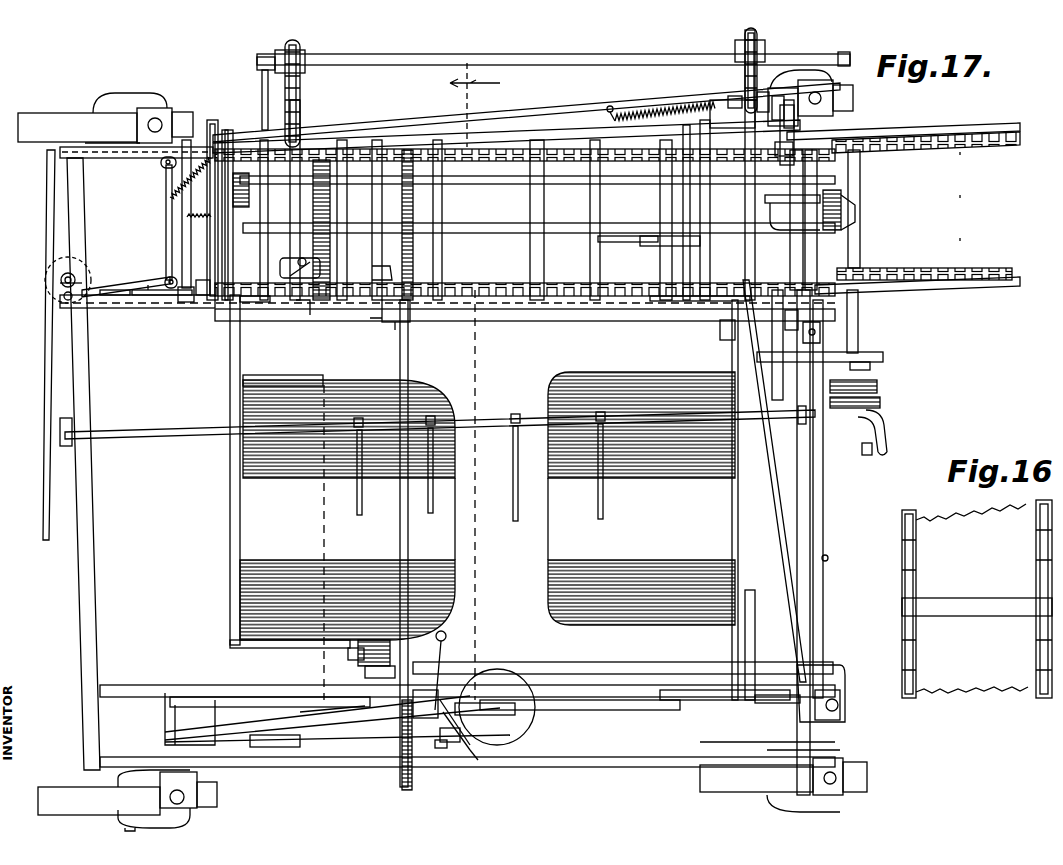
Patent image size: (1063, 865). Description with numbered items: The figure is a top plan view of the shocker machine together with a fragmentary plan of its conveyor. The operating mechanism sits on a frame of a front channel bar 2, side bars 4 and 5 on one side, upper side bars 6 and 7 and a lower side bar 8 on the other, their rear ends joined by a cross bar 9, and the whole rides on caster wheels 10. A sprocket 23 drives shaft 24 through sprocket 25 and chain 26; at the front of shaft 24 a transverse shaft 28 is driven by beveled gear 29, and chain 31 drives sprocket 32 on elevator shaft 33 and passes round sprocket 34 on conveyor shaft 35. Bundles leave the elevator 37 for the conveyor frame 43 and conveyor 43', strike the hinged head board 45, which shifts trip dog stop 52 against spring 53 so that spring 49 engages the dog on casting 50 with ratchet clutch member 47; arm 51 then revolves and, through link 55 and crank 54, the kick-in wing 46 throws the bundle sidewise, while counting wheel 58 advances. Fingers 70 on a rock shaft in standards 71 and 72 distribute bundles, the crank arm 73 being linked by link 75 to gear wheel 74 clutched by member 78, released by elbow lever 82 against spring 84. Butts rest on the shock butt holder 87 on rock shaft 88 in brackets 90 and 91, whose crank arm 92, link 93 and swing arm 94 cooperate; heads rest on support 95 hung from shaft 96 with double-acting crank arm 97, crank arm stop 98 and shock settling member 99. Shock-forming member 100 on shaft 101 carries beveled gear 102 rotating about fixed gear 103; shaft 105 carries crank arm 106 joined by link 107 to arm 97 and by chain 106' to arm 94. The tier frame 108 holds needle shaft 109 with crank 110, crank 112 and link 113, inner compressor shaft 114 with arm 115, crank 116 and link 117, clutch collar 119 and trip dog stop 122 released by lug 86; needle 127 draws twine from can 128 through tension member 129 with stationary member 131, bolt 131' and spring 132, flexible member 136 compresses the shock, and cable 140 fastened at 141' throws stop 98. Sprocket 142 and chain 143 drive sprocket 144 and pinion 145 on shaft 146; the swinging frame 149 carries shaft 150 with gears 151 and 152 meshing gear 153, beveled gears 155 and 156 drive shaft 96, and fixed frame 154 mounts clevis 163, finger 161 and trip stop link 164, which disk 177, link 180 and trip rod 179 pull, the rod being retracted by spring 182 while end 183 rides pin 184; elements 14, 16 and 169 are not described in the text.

In FIG. 17, the front channel bar 2 is at (805, 748).
In FIG. 17, the side bar 4 is at (288, 757).
In FIG. 17, the side bar 5 is at (118, 690).
In FIG. 17, the upper side bar 6 is at (48, 416).
In FIG. 17, the upper side bar 7 is at (125, 155).
In FIG. 17, the lower side bar 8 is at (60, 279).
In FIG. 17, the cross bar 9 is at (85, 590).
In FIG. 17, the caster wheel 10 is at (848, 98).
In FIG. 17, the shaft end 14 is at (848, 52).
In FIG. 17, the lower longitudinal beam 16 is at (123, 305).
In FIG. 17, the sprocket 23 is at (765, 43).
In FIG. 17, the shaft 24 is at (612, 222).
In FIG. 17, the sprocket 25 is at (760, 215).
In FIG. 17, the chain 26 is at (760, 95).
In FIG. 17, the transverse shaft 28 is at (855, 300).
In FIG. 17, the beveled gear 29 is at (850, 230).
In FIG. 17, the chain 31 is at (883, 352).
In FIG. 17, the sprocket 32 is at (870, 366).
In FIG. 17, the elevator shaft 33 is at (860, 313).
In FIG. 17, the sprocket 34 is at (720, 346).
In FIG. 17, the conveyor shaft 35 is at (720, 333).
In FIG. 17, the elevator 37 is at (976, 209).
In FIG. 17, the conveyor frame 43 is at (903, 199).
In FIG. 17, the hinged head board 45 is at (216, 228).
In FIG. 17, the kick-in wing 46 is at (228, 135).
In FIG. 17, the ratchet clutch member 47 is at (795, 110).
In FIG. 17, the spring 49 is at (740, 98).
In FIG. 17, the trip dog casting 50 is at (790, 105).
In FIG. 17, the arm 51 is at (778, 100).
In FIG. 17, the trip dog stop 52 is at (375, 125).
In FIG. 17, the spring 53 is at (612, 120).
In FIG. 17, the crank 54 is at (772, 200).
In FIG. 17, the link 55 is at (790, 152).
In FIG. 17, the wheel 58 is at (600, 240).
In FIG. 17, the depending finger 70 is at (360, 500).
In FIG. 17, the standard 71 is at (85, 430).
In FIG. 17, the standard 72 is at (806, 425).
In FIG. 17, the crank arm 73 is at (888, 432).
In FIG. 17, the gear wheel 74 is at (880, 402).
In FIG. 17, the link 75 is at (868, 428).
In FIG. 17, the clutch member 78 is at (877, 386).
In FIG. 17, the elbow lever 82 is at (795, 178).
In FIG. 17, the spring 84 is at (800, 320).
In FIG. 17, the lug 86 is at (600, 252).
In FIG. 17, the shock butt holder 87 is at (560, 616).
In FIG. 17, the rock shaft 88 is at (808, 245).
In FIG. 17, the bearing bracket 90 is at (762, 600).
In FIG. 17, the bearing bracket 91 is at (770, 420).
In FIG. 17, the crank arm 92 is at (690, 700).
In FIG. 17, the link 93 is at (590, 700).
In FIG. 17, the swing arm 94 is at (448, 740).
In FIG. 17, the support 95 is at (318, 383).
In FIG. 17, the shaft 96 is at (230, 345).
In FIG. 17, the double-acting crank arm 97 is at (200, 700).
In FIG. 17, the crank arm stop 98 is at (160, 740).
In FIG. 17, the shock settling member 99 is at (232, 585).
In FIG. 17, the shock-forming member 100 is at (470, 666).
In FIG. 17, the shaft 101 is at (350, 655).
In FIG. 17, the beveled gear 102 is at (378, 634).
In FIG. 17, the beveled gear 103 is at (365, 670).
In FIG. 17, the shaft 105 is at (415, 700).
In FIG. 17, the crank arm 106 is at (332, 723).
In FIG. 17, the chain 106' is at (332, 726).
In FIG. 17, the link 107 is at (248, 712).
In FIG. 17, the tier attachment frame 108 is at (505, 278).
In FIG. 17, the needle shaft 109 is at (780, 702).
In FIG. 17, the crank 110 is at (820, 692).
In FIG. 17, the crank 112 is at (822, 332).
In FIG. 17, the link 113 is at (828, 558).
In FIG. 17, the inner compressor shaft 114 is at (504, 318).
In FIG. 17, the inner compressor arm 115 is at (412, 325).
In FIG. 17, the inner compressor arm crank 116 is at (630, 318).
In FIG. 17, the link 117 is at (588, 318).
In FIG. 17, the clutch collar 119 is at (905, 290).
In FIG. 17, the trip dog stop 122 is at (660, 247).
In FIG. 17, the needle 127 is at (410, 578).
In FIG. 17, the twine can 128 is at (520, 720).
In FIG. 17, the twine tension member 129 is at (440, 745).
In FIG. 17, the stationary member 131 is at (455, 756).
In FIG. 17, the bolt 131' is at (493, 774).
In FIG. 17, the spring 132 is at (465, 740).
In FIG. 17, the flexible member 136 is at (440, 688).
In FIG. 17, the cable 140 is at (278, 745).
In FIG. 17, the cable fastening 141' is at (403, 754).
In FIG. 17, the sprocket 142 is at (308, 75).
In FIG. 17, the chain 143 is at (302, 110).
In FIG. 17, the sprocket 144 is at (333, 150).
In FIG. 17, the pinion 145 is at (332, 192).
In FIG. 17, the shaft 146 is at (445, 180).
In FIG. 17, the swinging variable gear frame 149 is at (392, 270).
In FIG. 17, the shaft 150 is at (340, 250).
In FIG. 17, the gear 151 is at (292, 268).
In FIG. 17, the pinion gear 152 is at (438, 252).
In FIG. 17, the gear 153 is at (416, 205).
In FIG. 17, the fixed gear frame 154 is at (285, 320).
In FIG. 17, the beveled gear 155 is at (235, 192).
In FIG. 17, the beveled gear 156 is at (186, 216).
In FIG. 17, the finger 161 is at (300, 278).
In FIG. 17, the clevis 163 is at (305, 275).
In FIG. 17, the trip stop and latch link 164 is at (190, 300).
In FIG. 17, the post 169 is at (190, 222).
In FIG. 17, the disk 177 is at (85, 279).
In FIG. 17, the trip rod 179 is at (165, 185).
In FIG. 17, the link 180 is at (128, 290).
In FIG. 17, the spring 182 is at (190, 190).
In FIG. 17, the end 183 is at (148, 300).
In FIG. 17, the pin 184 is at (158, 310).
In FIG. 16, the track rail 43' is at (977, 612).